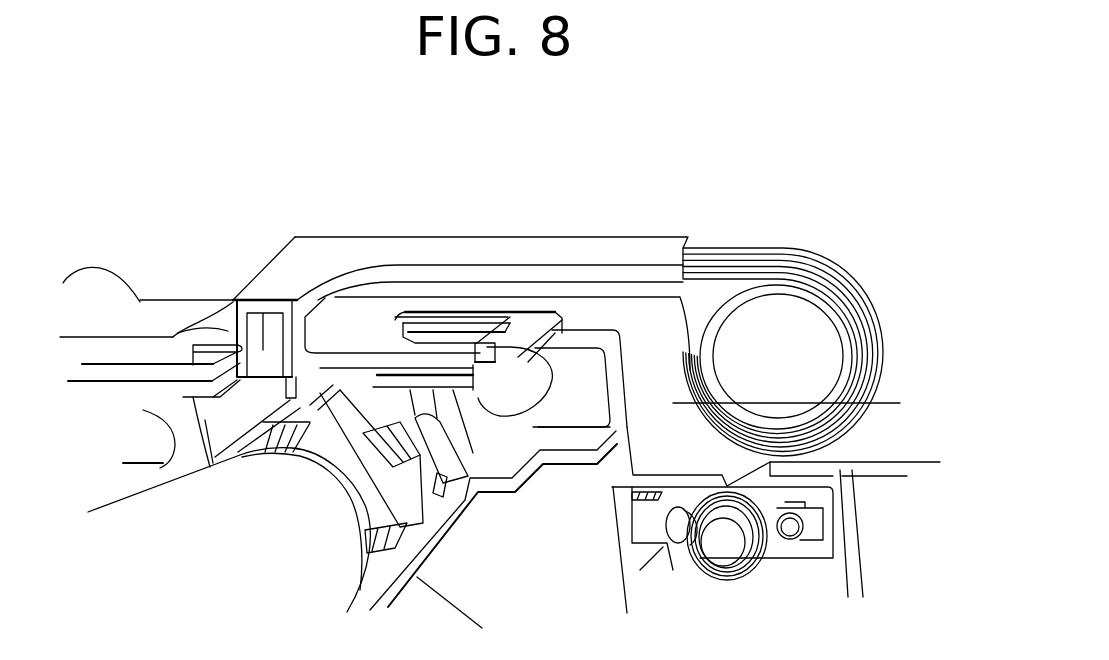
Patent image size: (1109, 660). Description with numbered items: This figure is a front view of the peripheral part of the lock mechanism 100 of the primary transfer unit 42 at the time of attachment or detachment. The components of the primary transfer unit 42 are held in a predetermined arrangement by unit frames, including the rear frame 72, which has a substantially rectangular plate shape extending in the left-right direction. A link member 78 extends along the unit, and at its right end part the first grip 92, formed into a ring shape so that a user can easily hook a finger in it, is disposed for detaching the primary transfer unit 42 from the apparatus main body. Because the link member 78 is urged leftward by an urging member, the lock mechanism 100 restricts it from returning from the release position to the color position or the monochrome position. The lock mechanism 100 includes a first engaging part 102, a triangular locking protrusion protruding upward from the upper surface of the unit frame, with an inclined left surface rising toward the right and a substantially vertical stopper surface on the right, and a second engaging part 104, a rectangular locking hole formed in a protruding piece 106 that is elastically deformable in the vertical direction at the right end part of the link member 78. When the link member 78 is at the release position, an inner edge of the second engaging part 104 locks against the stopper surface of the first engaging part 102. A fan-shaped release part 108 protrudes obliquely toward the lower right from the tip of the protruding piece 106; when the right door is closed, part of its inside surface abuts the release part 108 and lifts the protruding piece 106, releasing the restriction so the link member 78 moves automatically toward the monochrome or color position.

The primary transfer unit 42 is at (206, 135).
The rear frame 72 is at (575, 388).
The link member 78 is at (155, 373).
The first grip 92 is at (870, 300).
The lock mechanism 100 is at (530, 184).
The first engaging part 102 is at (486, 343).
The second engaging part 104 is at (493, 343).
The protruding piece 106 is at (527, 322).
The release part 108 is at (525, 390).